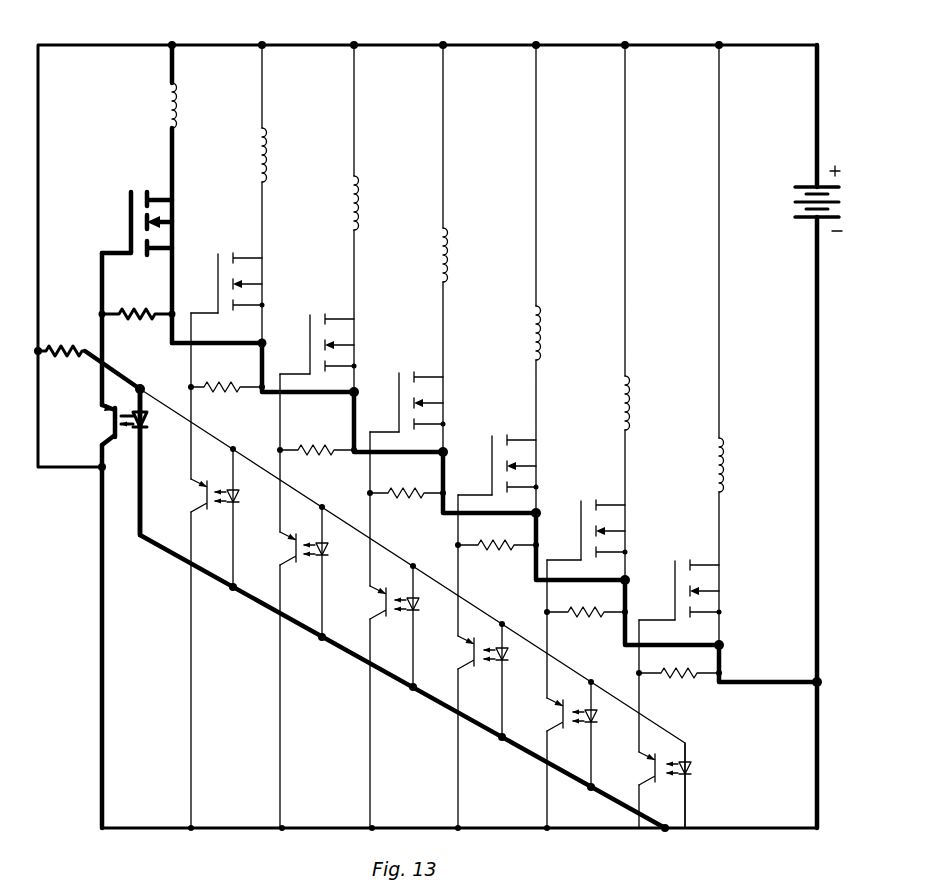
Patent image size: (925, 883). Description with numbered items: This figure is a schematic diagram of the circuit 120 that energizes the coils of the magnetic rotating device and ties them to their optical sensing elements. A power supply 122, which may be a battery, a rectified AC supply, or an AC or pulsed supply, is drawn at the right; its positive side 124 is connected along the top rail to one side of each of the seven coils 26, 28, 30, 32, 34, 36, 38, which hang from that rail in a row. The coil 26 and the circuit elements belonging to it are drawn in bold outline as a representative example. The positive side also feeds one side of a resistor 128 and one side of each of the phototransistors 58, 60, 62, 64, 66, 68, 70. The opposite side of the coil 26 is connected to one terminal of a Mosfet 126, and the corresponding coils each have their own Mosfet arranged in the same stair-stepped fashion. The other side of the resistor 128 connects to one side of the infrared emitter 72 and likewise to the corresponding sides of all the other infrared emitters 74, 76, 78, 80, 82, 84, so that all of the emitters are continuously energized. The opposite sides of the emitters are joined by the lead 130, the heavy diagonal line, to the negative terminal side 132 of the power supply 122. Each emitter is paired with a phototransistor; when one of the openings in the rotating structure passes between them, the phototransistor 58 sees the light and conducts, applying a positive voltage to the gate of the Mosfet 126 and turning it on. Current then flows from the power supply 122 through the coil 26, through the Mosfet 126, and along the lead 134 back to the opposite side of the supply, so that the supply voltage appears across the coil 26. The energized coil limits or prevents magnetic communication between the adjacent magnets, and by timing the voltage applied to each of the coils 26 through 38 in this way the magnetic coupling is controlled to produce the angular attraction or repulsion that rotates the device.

The circuit 120 is at (615, 28).
The power supply 122 is at (780, 209).
The positive side of the power supply 124 is at (810, 182).
The negative terminal side of the power supply 132 is at (805, 217).
The coil 26 is at (170, 110).
The coil 28 is at (260, 166).
The coil 30 is at (352, 218).
The coil 32 is at (441, 262).
The coil 34 is at (534, 336).
The coil 36 is at (623, 408).
The coil 38 is at (717, 470).
The Mosfet 126 is at (112, 228).
The resistor 128 is at (68, 345).
The lead 134 is at (357, 417).
The lead 130 is at (360, 657).
The phototransistor 58 is at (115, 448).
The phototransistor 60 is at (215, 518).
The phototransistor 62 is at (300, 577).
The phototransistor 64 is at (393, 620).
The phototransistor 66 is at (478, 673).
The phototransistor 68 is at (567, 733).
The phototransistor 70 is at (655, 783).
The infrared emitter 72 is at (160, 428).
The infrared emitter 74 is at (246, 490).
The infrared emitter 76 is at (336, 538).
The infrared emitter 78 is at (430, 597).
The infrared emitter 80 is at (517, 648).
The infrared emitter 82 is at (605, 713).
The infrared emitter 84 is at (698, 768).